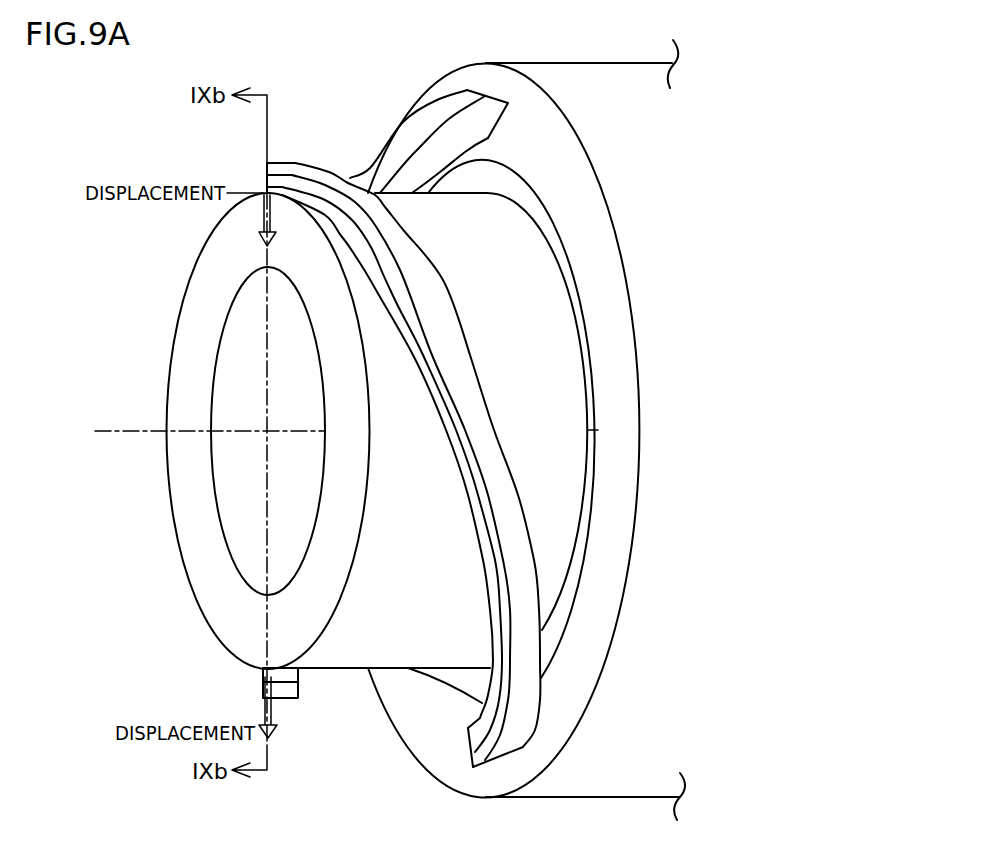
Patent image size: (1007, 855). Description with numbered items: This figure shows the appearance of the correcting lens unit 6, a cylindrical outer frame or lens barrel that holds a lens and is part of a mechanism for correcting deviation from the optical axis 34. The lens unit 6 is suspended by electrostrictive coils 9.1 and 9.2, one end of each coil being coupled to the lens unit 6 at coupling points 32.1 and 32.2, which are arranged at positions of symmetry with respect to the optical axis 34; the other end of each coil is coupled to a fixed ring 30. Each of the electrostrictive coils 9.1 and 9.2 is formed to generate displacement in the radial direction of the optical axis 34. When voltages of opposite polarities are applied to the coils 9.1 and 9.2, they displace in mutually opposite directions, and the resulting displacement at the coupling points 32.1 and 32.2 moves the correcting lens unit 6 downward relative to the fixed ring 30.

The correcting lens unit 6 is at (350, 652).
The fixed ring 30 is at (578, 197).
The electrostrictive coil 9.1 is at (523, 697).
The electrostrictive coil 9.2 is at (379, 156).
The coupling point 32.1 is at (300, 672).
The coupling point 32.2 is at (263, 194).
The optical axis 34 is at (110, 430).